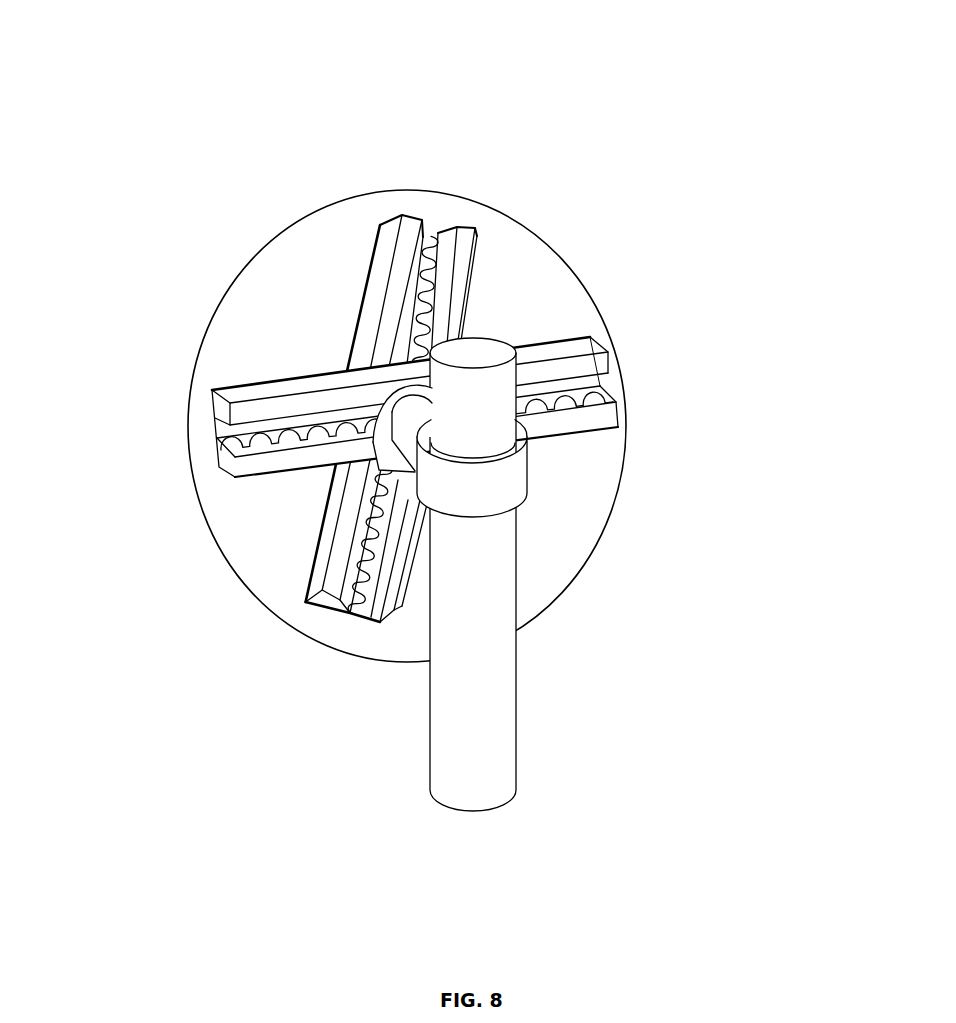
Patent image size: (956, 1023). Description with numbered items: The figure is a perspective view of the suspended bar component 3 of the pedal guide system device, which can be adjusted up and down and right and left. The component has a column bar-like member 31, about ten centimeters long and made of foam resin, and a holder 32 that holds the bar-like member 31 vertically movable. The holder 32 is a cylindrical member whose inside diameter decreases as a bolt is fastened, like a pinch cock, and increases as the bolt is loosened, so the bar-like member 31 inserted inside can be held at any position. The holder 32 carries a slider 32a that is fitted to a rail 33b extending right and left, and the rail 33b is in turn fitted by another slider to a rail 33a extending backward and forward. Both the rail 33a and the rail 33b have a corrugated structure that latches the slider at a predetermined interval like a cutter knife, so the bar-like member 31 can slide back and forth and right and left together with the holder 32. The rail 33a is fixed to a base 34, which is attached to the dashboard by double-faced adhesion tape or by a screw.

The suspended bar component 3 is at (449, 428).
The bar-like member 31 is at (517, 703).
The holder 32 is at (528, 478).
The slider 32a is at (376, 410).
The rail 33a is at (384, 246).
The rail 33b is at (622, 362).
The base 34 is at (553, 583).